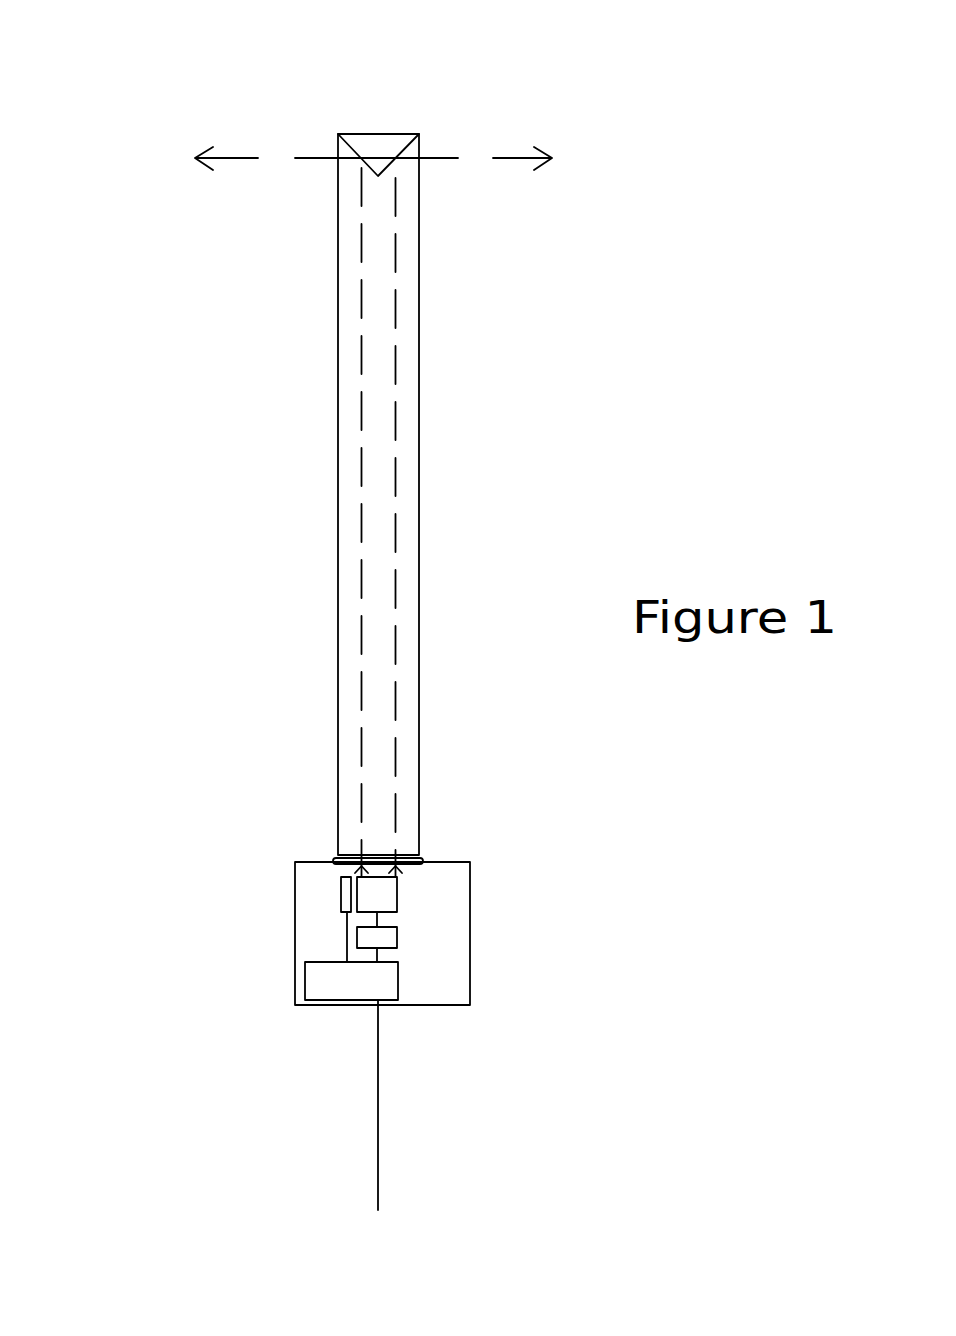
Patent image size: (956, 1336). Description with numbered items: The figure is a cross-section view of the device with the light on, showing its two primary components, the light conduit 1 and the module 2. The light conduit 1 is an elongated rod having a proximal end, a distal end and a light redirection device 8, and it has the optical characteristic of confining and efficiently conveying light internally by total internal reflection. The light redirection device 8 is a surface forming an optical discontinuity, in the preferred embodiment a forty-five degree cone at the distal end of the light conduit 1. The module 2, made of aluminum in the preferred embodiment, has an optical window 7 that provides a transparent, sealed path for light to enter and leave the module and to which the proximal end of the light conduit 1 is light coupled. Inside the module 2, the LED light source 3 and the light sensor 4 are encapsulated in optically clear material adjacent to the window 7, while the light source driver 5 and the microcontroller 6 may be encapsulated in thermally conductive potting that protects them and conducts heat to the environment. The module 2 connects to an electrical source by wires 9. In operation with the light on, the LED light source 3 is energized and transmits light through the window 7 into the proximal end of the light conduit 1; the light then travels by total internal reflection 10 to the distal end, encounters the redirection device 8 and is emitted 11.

The light conduit 1 is at (299, 528).
The module 2 is at (225, 983).
The LED light source 3 is at (418, 905).
The light sensor 4 is at (322, 902).
The light source driver 5 is at (415, 949).
The microcontroller 6 is at (418, 993).
The optical window 7 is at (430, 844).
The light redirection device 8 is at (389, 104).
The wires 9 is at (325, 1175).
The TIR light travel 10 is at (405, 467).
The emitted light 11 is at (359, 128).